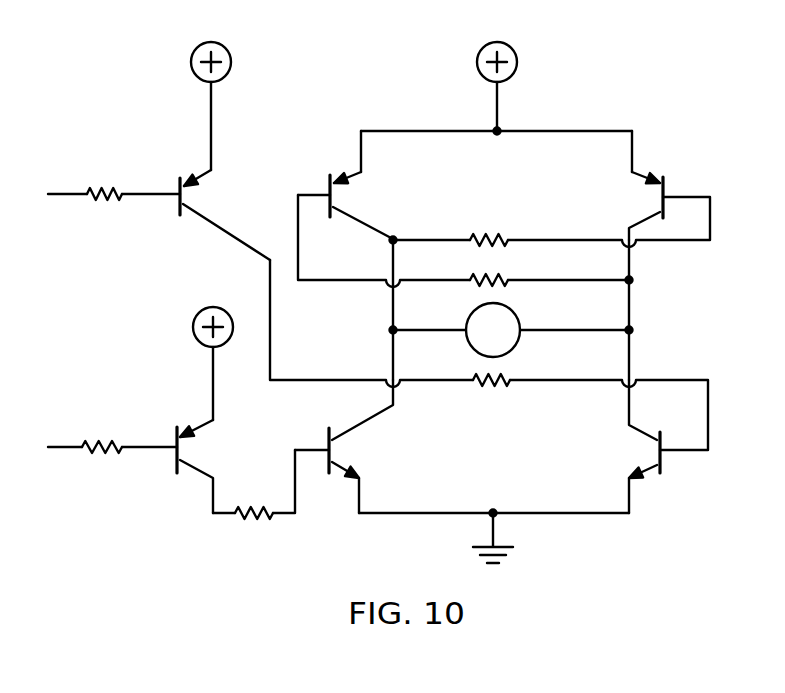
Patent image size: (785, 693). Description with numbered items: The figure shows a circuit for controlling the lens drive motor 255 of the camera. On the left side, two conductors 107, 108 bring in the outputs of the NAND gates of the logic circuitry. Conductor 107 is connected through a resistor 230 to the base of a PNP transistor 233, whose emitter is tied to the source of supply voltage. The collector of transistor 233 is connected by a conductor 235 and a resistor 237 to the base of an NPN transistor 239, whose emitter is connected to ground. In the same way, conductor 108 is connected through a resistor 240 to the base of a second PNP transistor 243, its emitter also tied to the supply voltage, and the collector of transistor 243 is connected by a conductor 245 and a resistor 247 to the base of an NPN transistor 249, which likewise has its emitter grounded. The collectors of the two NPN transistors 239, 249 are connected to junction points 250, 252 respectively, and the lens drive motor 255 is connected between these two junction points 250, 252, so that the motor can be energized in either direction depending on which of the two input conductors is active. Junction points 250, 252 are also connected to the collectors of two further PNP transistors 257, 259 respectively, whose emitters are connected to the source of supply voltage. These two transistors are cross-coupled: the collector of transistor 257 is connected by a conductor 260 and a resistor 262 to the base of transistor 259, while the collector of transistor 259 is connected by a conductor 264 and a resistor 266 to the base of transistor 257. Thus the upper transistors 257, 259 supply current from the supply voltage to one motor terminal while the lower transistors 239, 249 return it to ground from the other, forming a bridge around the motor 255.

The conductor 107 is at (63, 193).
The conductor 108 is at (67, 446).
The resistor 230 is at (100, 193).
The PNP transistor 233 is at (185, 195).
The conductor 235 is at (302, 378).
The resistor 237 is at (494, 384).
The NPN transistor 239 is at (653, 447).
The resistor 240 is at (101, 446).
The PNP transistor 243 is at (182, 450).
The conductor 245 is at (206, 475).
The resistor 247 is at (258, 516).
The NPN transistor 249 is at (337, 452).
The junction point 250 is at (632, 330).
The junction point 252 is at (391, 331).
The lens drive motor 255 is at (521, 346).
The PNP transistor 257 is at (659, 198).
The PNP transistor 259 is at (337, 193).
The conductor 260 is at (561, 281).
The resistor 262 is at (487, 278).
The conductor 264 is at (441, 239).
The resistor 266 is at (487, 238).